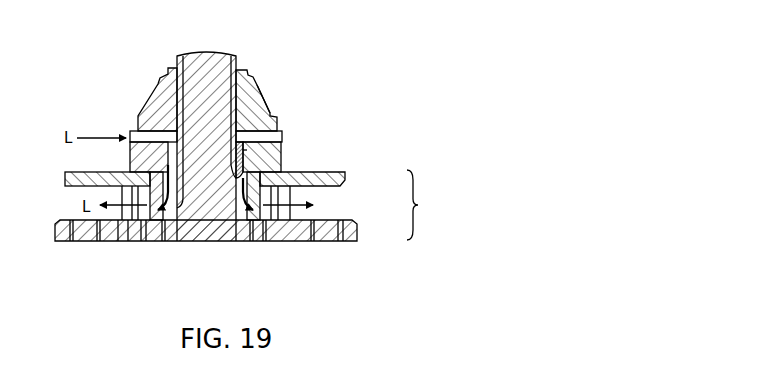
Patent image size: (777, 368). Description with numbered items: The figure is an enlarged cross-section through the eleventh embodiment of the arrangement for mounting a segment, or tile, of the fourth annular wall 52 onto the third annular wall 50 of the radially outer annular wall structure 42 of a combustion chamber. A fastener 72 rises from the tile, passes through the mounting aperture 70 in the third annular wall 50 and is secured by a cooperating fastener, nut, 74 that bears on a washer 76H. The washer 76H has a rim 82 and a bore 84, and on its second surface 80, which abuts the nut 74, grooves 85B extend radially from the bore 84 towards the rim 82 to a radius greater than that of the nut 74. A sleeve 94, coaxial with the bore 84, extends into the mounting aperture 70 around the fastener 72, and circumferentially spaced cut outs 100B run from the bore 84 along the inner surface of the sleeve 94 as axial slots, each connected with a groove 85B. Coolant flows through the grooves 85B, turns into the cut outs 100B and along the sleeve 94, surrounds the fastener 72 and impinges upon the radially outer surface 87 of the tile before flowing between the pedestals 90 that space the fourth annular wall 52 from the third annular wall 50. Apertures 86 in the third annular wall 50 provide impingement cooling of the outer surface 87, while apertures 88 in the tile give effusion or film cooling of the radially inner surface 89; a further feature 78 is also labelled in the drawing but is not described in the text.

The fastener 72 is at (222, 57).
The cooperating fastener, nut 74 is at (258, 88).
The second surface 80 is at (263, 122).
The rim 82 is at (128, 132).
The grooves 85B is at (244, 144).
The washer 76H is at (262, 150).
The cut outs 100B is at (266, 163).
The bore 84 is at (272, 173).
The apertures 86 is at (82, 174).
The third annular wall 50 is at (292, 198).
The pedestals 90 is at (300, 202).
The radially outer surface 87 is at (333, 220).
The radially outer annular wall structure 42 is at (418, 205).
The fourth annular wall 52 is at (357, 243).
The apertures 88 is at (93, 243).
The fastener 78 is at (125, 243).
The sleeve 94 is at (163, 243).
The radially inner surface 89 is at (183, 243).
The mounting aperture 70 is at (258, 243).